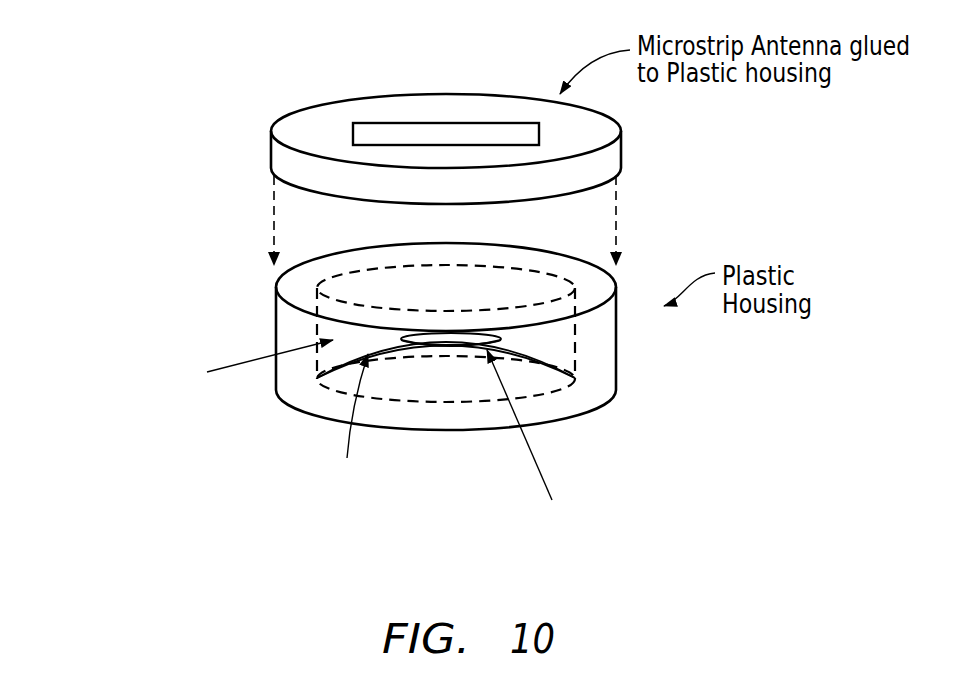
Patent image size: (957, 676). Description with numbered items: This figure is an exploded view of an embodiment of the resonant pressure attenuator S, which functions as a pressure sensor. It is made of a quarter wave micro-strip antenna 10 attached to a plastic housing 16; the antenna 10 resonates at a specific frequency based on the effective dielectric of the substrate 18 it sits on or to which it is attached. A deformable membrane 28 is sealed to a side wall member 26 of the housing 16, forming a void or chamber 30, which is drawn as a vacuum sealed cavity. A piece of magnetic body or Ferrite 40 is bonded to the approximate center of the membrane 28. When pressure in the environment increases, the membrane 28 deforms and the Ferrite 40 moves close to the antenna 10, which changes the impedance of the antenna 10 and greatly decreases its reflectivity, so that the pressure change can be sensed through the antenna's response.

The micro-strip antenna 10 is at (426, 138).
The substrate 18 is at (303, 125).
The plastic housing 16 is at (636, 142).
The resonant pressure attenuator S is at (648, 204).
The void or chamber 30 is at (463, 297).
The side wall member 26 is at (288, 342).
The membrane 28 is at (553, 362).
The Ferrite 40 is at (453, 350).